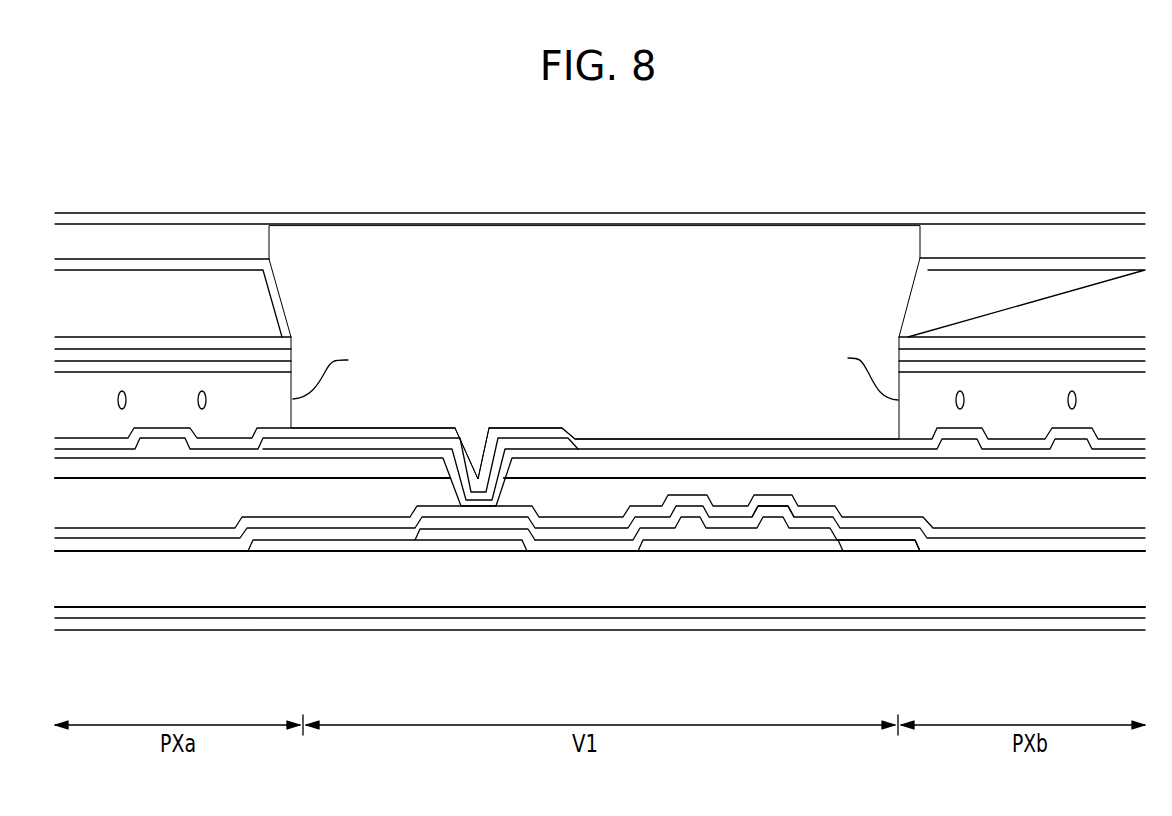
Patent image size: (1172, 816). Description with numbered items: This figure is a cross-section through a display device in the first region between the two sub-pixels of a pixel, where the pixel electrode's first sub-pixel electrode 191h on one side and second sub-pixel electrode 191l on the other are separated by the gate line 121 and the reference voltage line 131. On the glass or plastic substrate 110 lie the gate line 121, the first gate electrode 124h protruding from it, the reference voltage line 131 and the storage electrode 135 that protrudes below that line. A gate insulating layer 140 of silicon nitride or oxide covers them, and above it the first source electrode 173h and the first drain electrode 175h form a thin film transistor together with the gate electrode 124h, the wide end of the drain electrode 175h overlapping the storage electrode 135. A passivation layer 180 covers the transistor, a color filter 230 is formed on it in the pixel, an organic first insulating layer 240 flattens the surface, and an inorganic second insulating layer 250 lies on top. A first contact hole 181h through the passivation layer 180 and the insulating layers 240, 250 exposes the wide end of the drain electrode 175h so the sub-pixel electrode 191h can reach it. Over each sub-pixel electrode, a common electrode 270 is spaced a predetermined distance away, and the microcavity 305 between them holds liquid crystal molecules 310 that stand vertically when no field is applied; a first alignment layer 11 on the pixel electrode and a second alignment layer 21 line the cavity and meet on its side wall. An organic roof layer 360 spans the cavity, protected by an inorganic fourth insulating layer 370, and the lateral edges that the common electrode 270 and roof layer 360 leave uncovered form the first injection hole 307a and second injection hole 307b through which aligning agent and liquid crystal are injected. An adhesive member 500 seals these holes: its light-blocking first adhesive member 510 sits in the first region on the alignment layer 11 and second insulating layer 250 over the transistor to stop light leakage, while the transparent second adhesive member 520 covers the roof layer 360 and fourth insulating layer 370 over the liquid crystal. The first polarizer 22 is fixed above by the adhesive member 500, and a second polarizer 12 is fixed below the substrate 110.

The first polarizer 22 is at (645, 222).
The second alignment layer 21 is at (1103, 363).
The first adhesive member 510 is at (445, 252).
The second adhesive member 520 is at (249, 243).
The adhesive member 500 is at (237, 160).
The fourth insulating layer 370 is at (198, 263).
The roof layer 360 is at (88, 293).
The common electrode 270 is at (1057, 355).
The microcavity 305 is at (160, 397).
The liquid crystal molecule 310 is at (966, 400).
The first injection hole 307a is at (849, 369).
The second injection hole 307b is at (344, 371).
The first alignment layer 11 is at (85, 442).
The first sub-pixel electrode 191h is at (392, 442).
The second sub-pixel electrode 191l is at (1075, 445).
The second insulating layer 250 is at (614, 452).
The first insulating layer 240 is at (983, 468).
The color filter 230 is at (138, 512).
The first contact hole 181h is at (455, 483).
The passivation layer 180 is at (197, 533).
The first drain electrode 175h is at (500, 522).
The first source electrode 173h is at (812, 523).
The storage electrode 135 is at (472, 545).
The gate insulating layer 140 is at (596, 545).
The reference voltage line 131 is at (283, 545).
The first gate electrode 124h is at (666, 545).
The gate line 121 is at (905, 547).
The substrate 110 is at (868, 592).
The second polarizer 12 is at (750, 632).